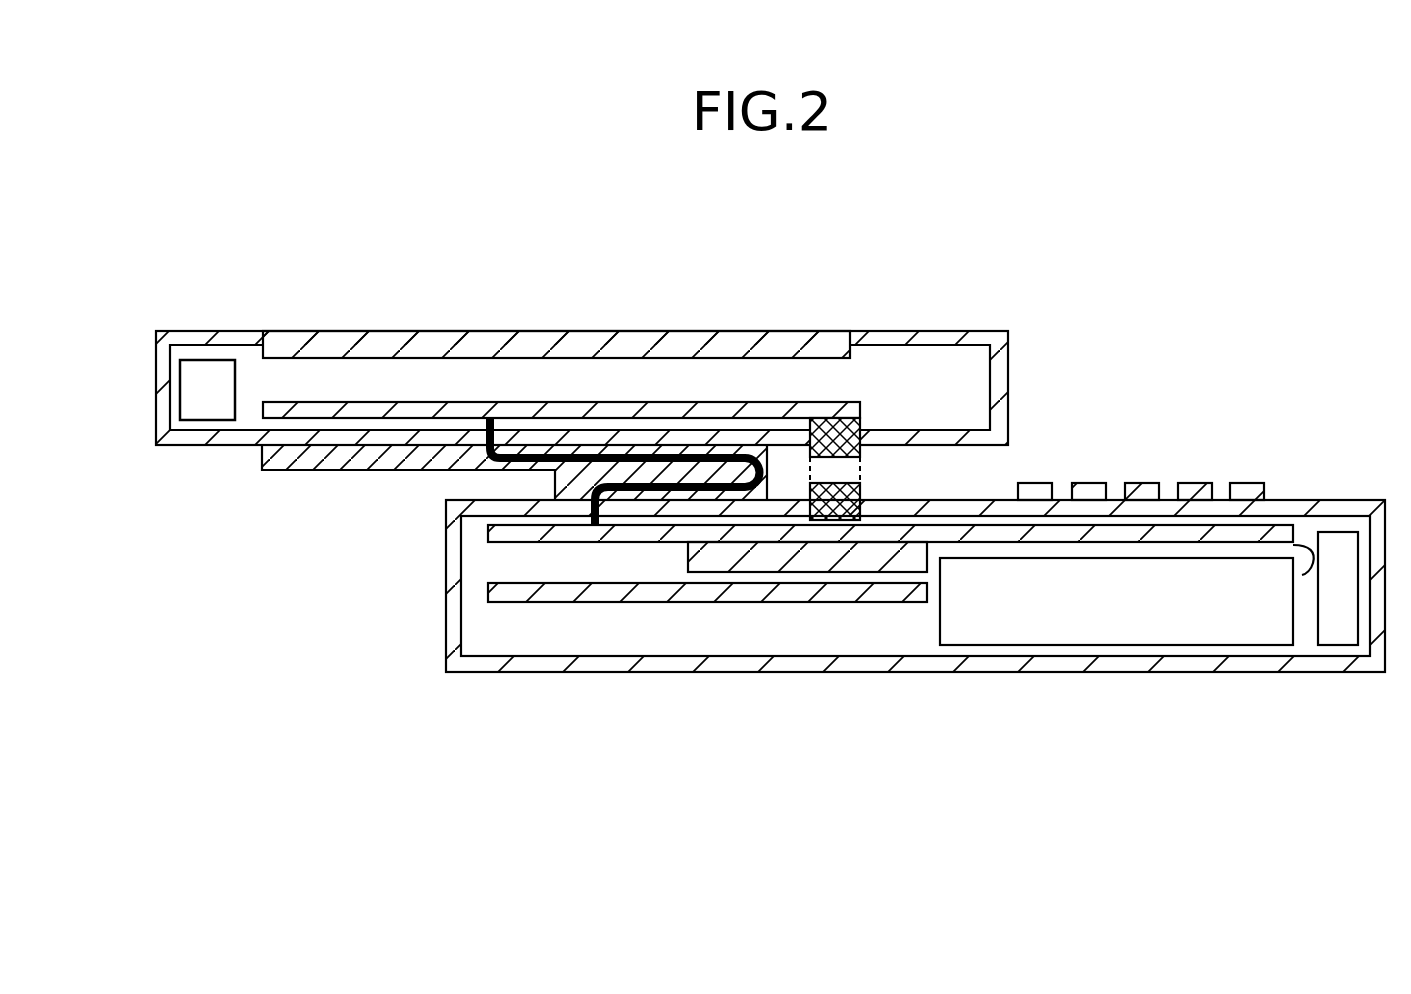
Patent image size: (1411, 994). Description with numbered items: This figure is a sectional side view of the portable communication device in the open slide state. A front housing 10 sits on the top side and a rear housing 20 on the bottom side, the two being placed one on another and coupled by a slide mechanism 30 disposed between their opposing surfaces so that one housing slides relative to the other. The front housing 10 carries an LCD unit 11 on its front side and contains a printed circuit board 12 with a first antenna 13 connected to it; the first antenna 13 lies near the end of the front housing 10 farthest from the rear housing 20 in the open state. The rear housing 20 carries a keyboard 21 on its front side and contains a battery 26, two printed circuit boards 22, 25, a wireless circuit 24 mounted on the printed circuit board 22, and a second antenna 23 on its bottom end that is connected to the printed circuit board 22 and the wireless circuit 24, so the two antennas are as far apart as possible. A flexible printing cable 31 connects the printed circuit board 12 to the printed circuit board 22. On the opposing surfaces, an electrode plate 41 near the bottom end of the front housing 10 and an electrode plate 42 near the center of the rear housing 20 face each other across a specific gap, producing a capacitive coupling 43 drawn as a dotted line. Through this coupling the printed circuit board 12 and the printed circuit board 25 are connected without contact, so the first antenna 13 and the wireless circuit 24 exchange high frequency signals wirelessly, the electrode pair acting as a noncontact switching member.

The front housing 10 is at (227, 330).
The LCD unit 11 is at (685, 331).
The printed circuit board 12 is at (828, 401).
The first antenna 13 is at (155, 397).
The rear housing 20 is at (446, 636).
The keyboard 21 is at (1262, 482).
The printed circuit board 22 is at (492, 525).
The second antenna 23 is at (1340, 618).
The wireless circuit 24 is at (783, 560).
The printed circuit board 25 is at (614, 603).
The battery 26 is at (1135, 617).
The slide mechanism 30 is at (553, 485).
The flexible printing cable 31 is at (567, 455).
The electrode plate 41 is at (862, 453).
The electrode plate 42 is at (837, 521).
The gap between connectors 43 is at (863, 477).